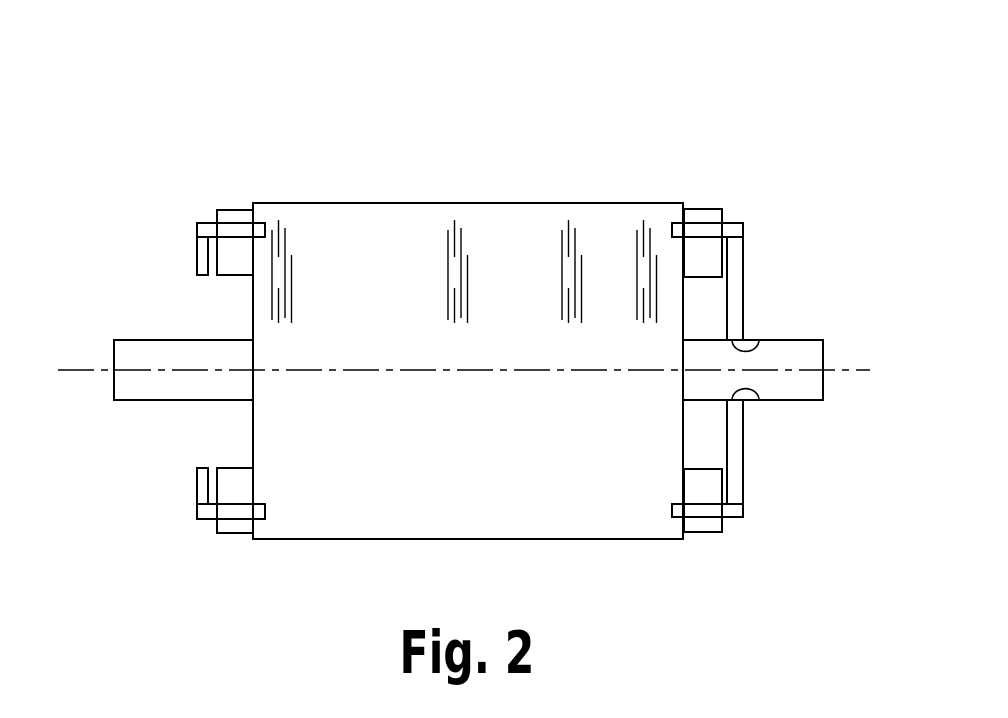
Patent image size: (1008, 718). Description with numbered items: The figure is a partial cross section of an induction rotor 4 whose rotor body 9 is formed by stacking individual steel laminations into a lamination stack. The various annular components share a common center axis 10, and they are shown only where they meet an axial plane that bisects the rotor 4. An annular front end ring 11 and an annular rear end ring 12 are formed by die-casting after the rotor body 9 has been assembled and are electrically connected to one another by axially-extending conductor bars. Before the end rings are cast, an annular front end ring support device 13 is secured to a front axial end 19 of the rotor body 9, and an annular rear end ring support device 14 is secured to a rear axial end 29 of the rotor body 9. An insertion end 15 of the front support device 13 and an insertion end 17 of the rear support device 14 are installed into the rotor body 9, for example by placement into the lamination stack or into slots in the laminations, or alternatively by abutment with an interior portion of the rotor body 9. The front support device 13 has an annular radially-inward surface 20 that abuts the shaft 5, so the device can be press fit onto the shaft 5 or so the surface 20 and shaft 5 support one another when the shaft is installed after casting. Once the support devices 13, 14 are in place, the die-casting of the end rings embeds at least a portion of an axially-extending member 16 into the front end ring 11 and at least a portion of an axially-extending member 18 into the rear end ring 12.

The induction rotor 4 is at (628, 97).
The shaft 5 is at (808, 352).
The rotor body 9 is at (418, 215).
The center axis 10 is at (853, 372).
The front end ring 11 is at (712, 216).
The rear end ring 12 is at (235, 213).
The front end ring support device 13 is at (735, 286).
The rear end ring support device 14 is at (202, 255).
The insertion end 15 is at (682, 228).
The axially-extending member 16 is at (698, 228).
The insertion end 17 is at (262, 230).
The axially-extending member 18 is at (233, 232).
The front axial end 19 is at (663, 445).
The radially-inward surface 20 is at (757, 343).
The rear axial end 29 is at (278, 436).